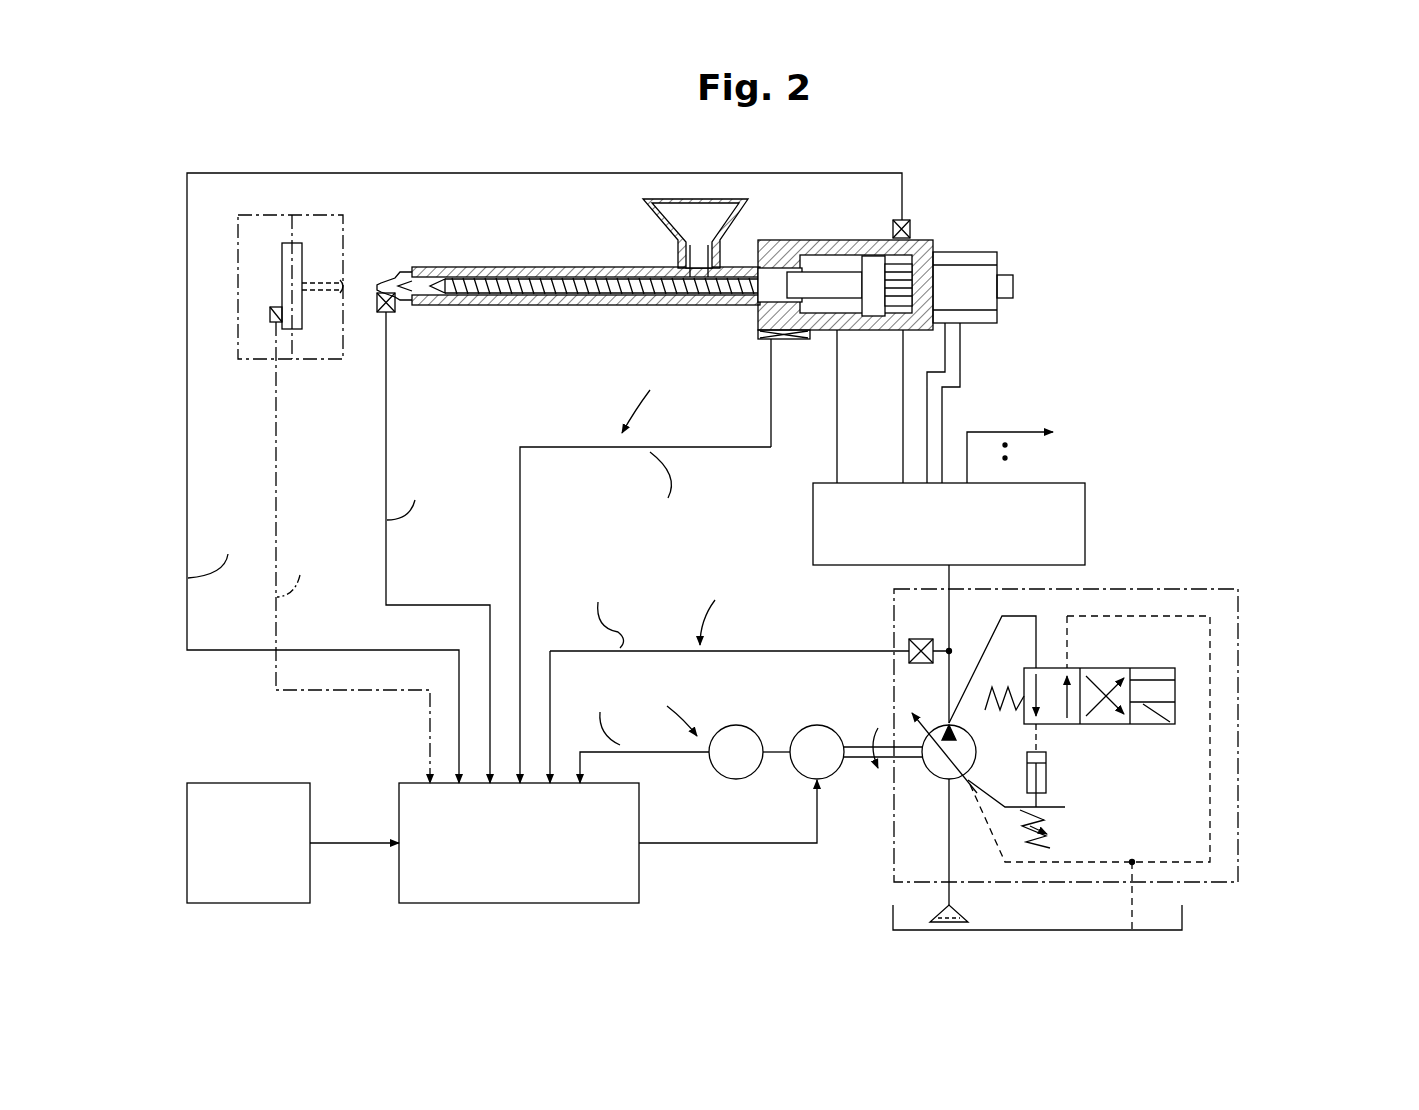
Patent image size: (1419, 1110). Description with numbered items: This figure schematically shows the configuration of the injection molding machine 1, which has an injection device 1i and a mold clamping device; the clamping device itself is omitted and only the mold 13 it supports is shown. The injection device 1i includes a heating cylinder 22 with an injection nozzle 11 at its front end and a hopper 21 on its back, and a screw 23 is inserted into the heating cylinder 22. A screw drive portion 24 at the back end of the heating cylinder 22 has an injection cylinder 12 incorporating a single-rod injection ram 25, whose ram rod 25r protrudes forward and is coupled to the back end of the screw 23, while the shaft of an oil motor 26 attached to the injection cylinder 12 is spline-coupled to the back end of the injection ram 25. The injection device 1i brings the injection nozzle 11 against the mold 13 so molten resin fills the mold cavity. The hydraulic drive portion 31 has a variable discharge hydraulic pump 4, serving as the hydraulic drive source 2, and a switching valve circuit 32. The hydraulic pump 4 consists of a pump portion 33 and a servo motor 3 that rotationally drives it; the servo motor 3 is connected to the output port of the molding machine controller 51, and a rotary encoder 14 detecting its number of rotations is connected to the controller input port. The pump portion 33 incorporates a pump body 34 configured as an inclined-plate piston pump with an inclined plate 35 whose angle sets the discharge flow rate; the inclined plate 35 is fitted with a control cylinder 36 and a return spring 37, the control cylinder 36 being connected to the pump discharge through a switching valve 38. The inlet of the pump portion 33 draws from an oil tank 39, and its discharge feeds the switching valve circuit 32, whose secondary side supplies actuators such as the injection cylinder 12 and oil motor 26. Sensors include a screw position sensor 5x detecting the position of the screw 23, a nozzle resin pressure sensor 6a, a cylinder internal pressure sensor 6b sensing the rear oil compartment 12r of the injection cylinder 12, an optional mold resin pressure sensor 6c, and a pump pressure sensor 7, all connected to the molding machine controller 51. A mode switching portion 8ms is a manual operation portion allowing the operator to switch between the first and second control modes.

The injection molding machine 1 is at (1028, 171).
The injection device 1i is at (1048, 250).
The injection nozzle 11 is at (380, 282).
The heating cylinder 22 is at (527, 306).
The screw 23 is at (518, 272).
The hopper 21 is at (660, 216).
The injection cylinder 12 is at (848, 241).
The injection ram 25 is at (872, 257).
The rear oil compartment 12r is at (895, 312).
The ram rod 25r is at (828, 328).
The screw position sensor 5x is at (760, 346).
The oil motor 26 is at (1000, 262).
The screw drive portion 24 is at (1016, 316).
The nozzle resin pressure sensor 6a is at (393, 312).
The cylinder internal pressure sensor 6b is at (910, 225).
The mold resin pressure sensor 6c is at (273, 316).
The mold 13 is at (300, 378).
The molding machine controller 51 is at (399, 797).
The mode switching portion 8ms is at (252, 782).
The rotary encoder 14 is at (755, 735).
The servo motor 3 is at (826, 732).
The hydraulic drive portion 31 is at (1268, 550).
The switching valve circuit 32 is at (1087, 525).
The pump pressure sensor 7 is at (905, 640).
The hydraulic drive source 2 is at (1245, 650).
The hydraulic pump 4 is at (1150, 587).
The pump body 34 is at (937, 780).
The pump portion 33 is at (1135, 739).
The switching valve 38 is at (1105, 668).
The control cylinder 36 is at (1050, 773).
The inclined plate 35 is at (1062, 808).
The return spring 37 is at (1050, 826).
The oil tank 39 is at (1183, 918).